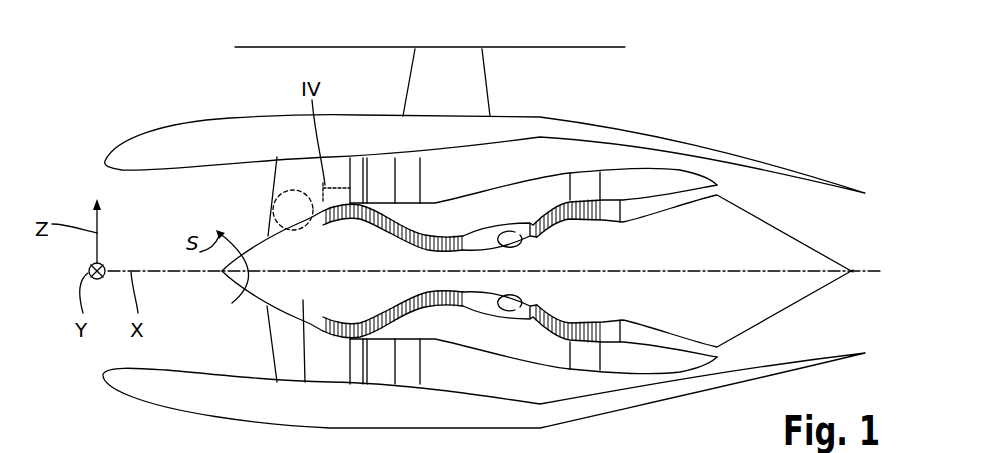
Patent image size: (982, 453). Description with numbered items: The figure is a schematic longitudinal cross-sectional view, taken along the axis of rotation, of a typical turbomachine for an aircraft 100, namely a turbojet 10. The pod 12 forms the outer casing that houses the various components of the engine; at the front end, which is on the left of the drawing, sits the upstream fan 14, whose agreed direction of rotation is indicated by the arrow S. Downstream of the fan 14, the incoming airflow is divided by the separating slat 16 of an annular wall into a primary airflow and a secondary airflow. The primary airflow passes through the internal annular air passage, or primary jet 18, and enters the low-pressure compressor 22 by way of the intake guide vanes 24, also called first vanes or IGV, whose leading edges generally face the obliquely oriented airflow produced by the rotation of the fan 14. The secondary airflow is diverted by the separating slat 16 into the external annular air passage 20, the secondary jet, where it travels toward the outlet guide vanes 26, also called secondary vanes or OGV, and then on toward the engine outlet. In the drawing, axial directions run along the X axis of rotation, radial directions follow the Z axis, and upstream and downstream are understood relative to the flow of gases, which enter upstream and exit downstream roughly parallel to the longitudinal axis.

The aircraft 100 is at (303, 45).
The pod 12 is at (372, 108).
The turbojet 10 is at (548, 98).
The external annular air passage 20 is at (340, 175).
The outlet guide vanes 26 is at (366, 187).
The separating slat 16 is at (327, 208).
The upstream fan 14 is at (290, 195).
The intake guide vanes 24 is at (302, 157).
The primary jet 18 is at (331, 224).
The low-pressure compressor 22 is at (358, 223).